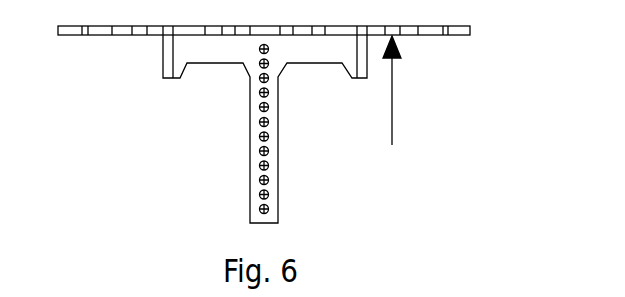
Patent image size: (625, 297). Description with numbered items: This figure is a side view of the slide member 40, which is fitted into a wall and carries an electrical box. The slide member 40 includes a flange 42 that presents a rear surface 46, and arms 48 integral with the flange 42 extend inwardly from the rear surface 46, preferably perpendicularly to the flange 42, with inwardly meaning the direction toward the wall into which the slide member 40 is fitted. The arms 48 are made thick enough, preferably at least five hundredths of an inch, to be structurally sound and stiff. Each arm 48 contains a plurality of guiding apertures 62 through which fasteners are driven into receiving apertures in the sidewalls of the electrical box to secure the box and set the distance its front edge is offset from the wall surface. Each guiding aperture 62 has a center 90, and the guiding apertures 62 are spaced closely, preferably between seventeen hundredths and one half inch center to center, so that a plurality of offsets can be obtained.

The slide member 40 is at (452, 156).
The flange 42 is at (456, 36).
The rear surface 46 is at (396, 102).
The arm 48 is at (278, 203).
The guiding aperture 62 is at (259, 122).
The center 90 is at (269, 107).